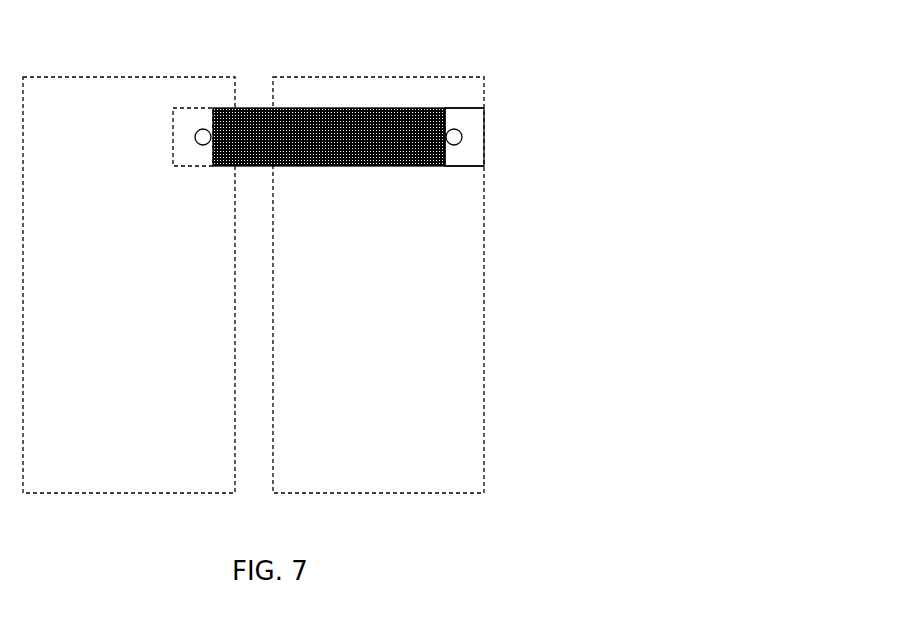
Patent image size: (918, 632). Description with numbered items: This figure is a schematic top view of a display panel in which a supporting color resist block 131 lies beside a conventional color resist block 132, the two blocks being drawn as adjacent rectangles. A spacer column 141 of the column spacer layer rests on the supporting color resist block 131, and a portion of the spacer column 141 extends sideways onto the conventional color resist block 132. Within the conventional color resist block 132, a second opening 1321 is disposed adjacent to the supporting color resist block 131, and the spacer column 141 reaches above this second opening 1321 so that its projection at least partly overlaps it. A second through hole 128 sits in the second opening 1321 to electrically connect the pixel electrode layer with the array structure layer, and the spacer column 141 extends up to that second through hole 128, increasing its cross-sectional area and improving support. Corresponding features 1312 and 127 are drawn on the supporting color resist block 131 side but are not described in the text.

The conventional color resist block 132 is at (134, 426).
The supporting color resist block 131 is at (440, 380).
The second opening 1321 is at (170, 136).
The spacer column 141 is at (305, 105).
The second through hole 128 is at (202, 126).
The first connecting portion 1312 is at (455, 126).
The connecting region 127 is at (468, 170).